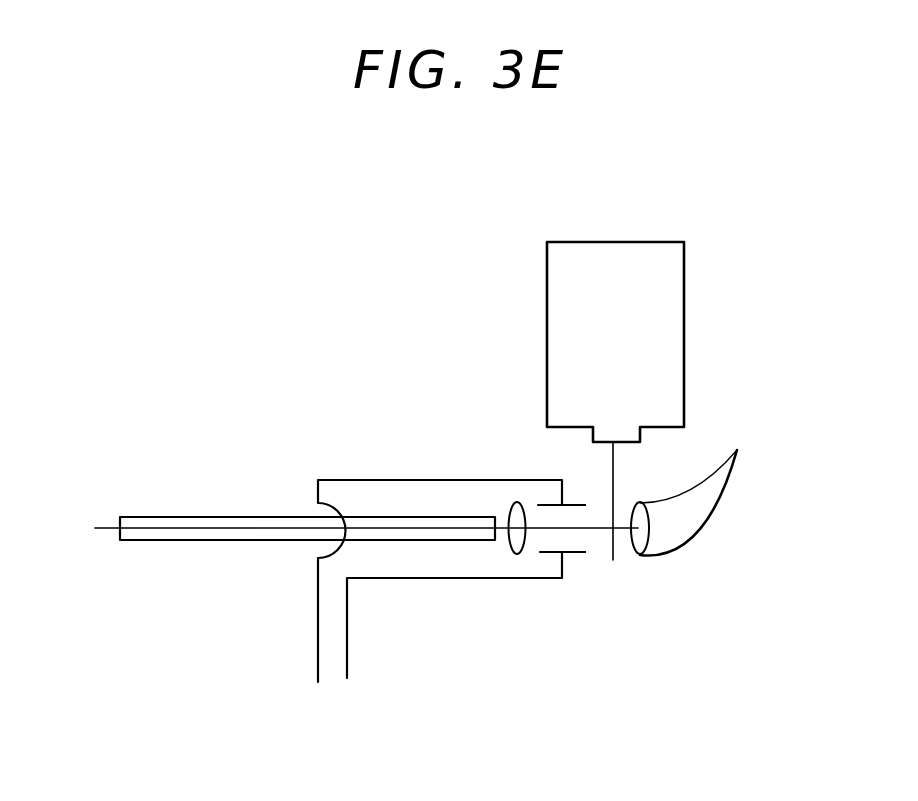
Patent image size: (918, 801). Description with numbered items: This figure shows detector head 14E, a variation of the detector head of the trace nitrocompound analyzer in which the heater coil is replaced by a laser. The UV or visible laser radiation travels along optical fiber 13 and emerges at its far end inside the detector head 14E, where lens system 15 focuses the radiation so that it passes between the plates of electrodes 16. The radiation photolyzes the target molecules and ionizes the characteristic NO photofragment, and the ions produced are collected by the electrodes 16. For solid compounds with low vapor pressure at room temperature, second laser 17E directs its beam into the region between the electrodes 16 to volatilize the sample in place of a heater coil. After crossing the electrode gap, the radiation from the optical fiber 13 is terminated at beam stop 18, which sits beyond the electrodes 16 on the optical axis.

The optical fiber 13 is at (159, 541).
The detector head 14E is at (793, 187).
The lens system 15 is at (503, 559).
The electrodes 16 is at (583, 561).
The second laser 17E is at (684, 328).
The beam stop 18 is at (712, 512).